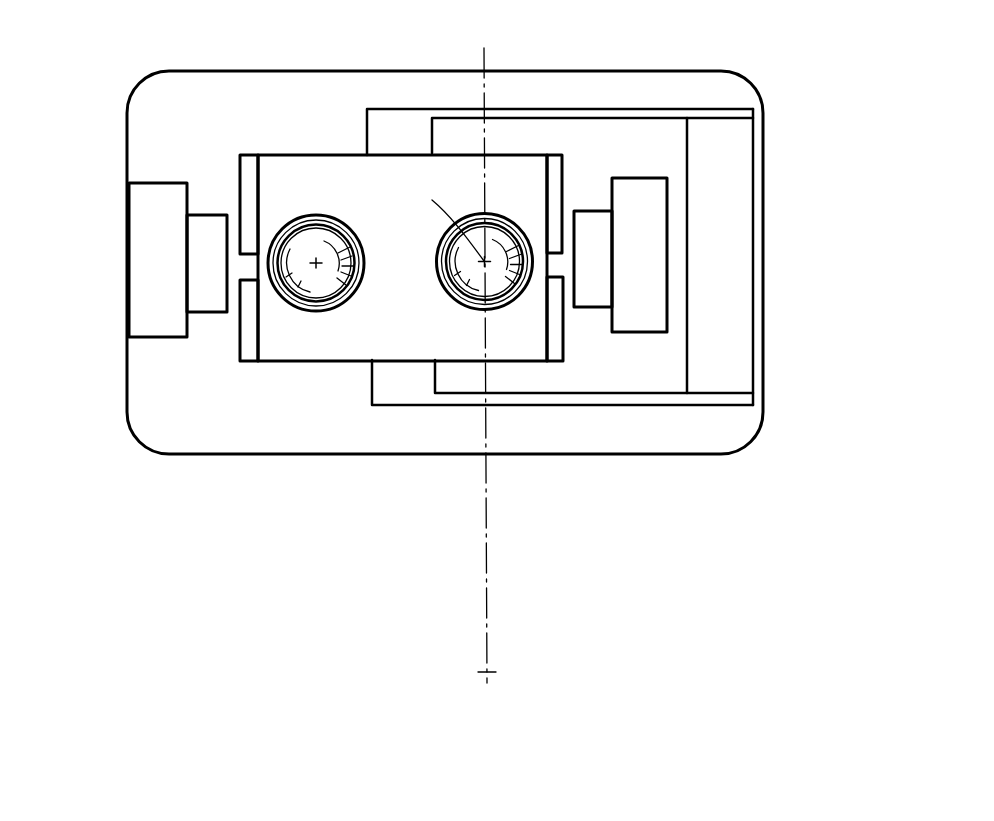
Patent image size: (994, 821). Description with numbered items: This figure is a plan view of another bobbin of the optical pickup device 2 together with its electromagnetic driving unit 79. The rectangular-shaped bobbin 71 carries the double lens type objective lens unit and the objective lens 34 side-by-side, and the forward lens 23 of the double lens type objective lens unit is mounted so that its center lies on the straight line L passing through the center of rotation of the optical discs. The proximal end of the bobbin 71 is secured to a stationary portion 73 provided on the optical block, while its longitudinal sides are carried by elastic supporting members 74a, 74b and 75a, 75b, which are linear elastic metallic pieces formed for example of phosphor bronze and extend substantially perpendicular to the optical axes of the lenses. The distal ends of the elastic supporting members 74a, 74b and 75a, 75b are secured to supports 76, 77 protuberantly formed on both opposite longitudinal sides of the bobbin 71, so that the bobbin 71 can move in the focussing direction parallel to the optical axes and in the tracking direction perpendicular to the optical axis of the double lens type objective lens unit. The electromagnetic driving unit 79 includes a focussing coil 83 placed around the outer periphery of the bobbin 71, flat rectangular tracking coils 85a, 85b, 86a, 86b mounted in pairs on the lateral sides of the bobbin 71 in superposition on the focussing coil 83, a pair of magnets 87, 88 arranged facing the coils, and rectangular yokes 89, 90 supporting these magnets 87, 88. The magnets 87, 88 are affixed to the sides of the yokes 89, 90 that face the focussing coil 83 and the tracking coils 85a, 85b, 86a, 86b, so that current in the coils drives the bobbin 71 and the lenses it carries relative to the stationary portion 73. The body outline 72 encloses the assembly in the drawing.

The optical pickup device 2 is at (756, 58).
The forward lens 23 is at (467, 282).
The objective lens 34 is at (317, 262).
The bobbin 71 is at (340, 338).
The camera body 72 is at (150, 415).
The stationary portion 73 is at (740, 298).
The elastic supporting member 74a is at (560, 79).
The elastic supporting member 74b is at (562, 449).
The elastic supporting member 75a is at (563, 109).
The elastic supporting member 75b is at (547, 405).
The support 76 is at (365, 153).
The support 77 is at (372, 365).
The electromagnetic driving unit 79 is at (183, 134).
The focussing coil 83 is at (275, 362).
The tracking coil 85a is at (563, 185).
The tracking coil 85b is at (563, 340).
The tracking coil 86a is at (238, 183).
The tracking coil 86b is at (239, 340).
The magnet 87 is at (590, 211).
The magnet 88 is at (207, 215).
The yoke 89 is at (667, 215).
The yoke 90 is at (128, 243).